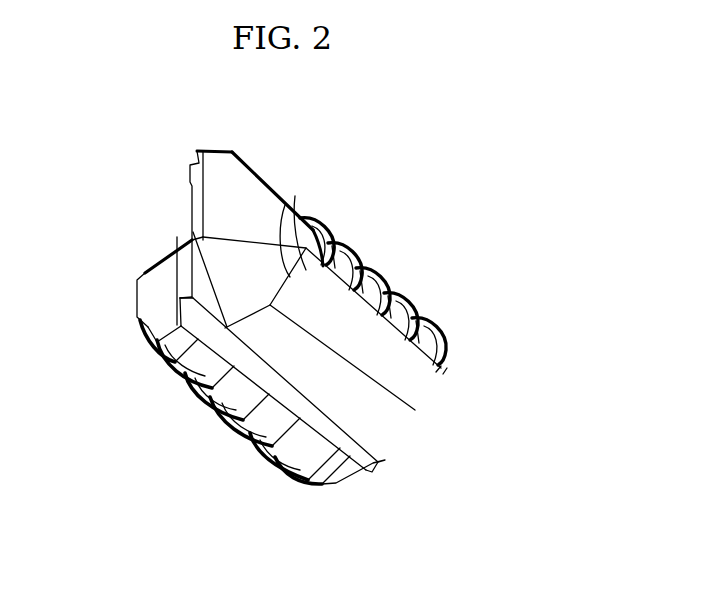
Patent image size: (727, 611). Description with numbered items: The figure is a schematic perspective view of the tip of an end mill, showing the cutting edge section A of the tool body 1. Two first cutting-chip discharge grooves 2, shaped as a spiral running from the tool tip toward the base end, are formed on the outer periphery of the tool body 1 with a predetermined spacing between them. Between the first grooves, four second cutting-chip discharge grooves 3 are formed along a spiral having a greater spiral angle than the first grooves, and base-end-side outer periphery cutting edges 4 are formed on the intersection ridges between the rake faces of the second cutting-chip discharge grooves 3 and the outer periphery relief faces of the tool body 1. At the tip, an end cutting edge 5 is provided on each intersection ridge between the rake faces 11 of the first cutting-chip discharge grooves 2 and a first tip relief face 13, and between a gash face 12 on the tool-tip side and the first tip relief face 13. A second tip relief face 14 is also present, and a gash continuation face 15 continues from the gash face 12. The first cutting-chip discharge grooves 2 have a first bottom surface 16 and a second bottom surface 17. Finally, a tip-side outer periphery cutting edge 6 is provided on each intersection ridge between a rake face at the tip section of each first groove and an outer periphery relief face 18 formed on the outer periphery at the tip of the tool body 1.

The tool body 1 is at (372, 440).
The first cutting-chip discharge grooves 2 is at (368, 372).
The second cutting-chip discharge grooves 3 is at (316, 228).
The base-end-side outer periphery cutting edges 4 is at (329, 218).
The end cutting edge 5 is at (197, 163).
The tip-side outer periphery cutting edge 6 is at (180, 333).
The rake faces 11 is at (278, 396).
The gash face 12 is at (195, 270).
The first tip relief face 13 is at (193, 212).
The second tip relief face 14 is at (218, 158).
The gash continuation face 15 is at (263, 253).
The first bottom surface 16 is at (291, 235).
The second bottom surface 17 is at (308, 392).
The outer periphery relief face 18 is at (180, 348).
The cutting edge section A is at (196, 420).